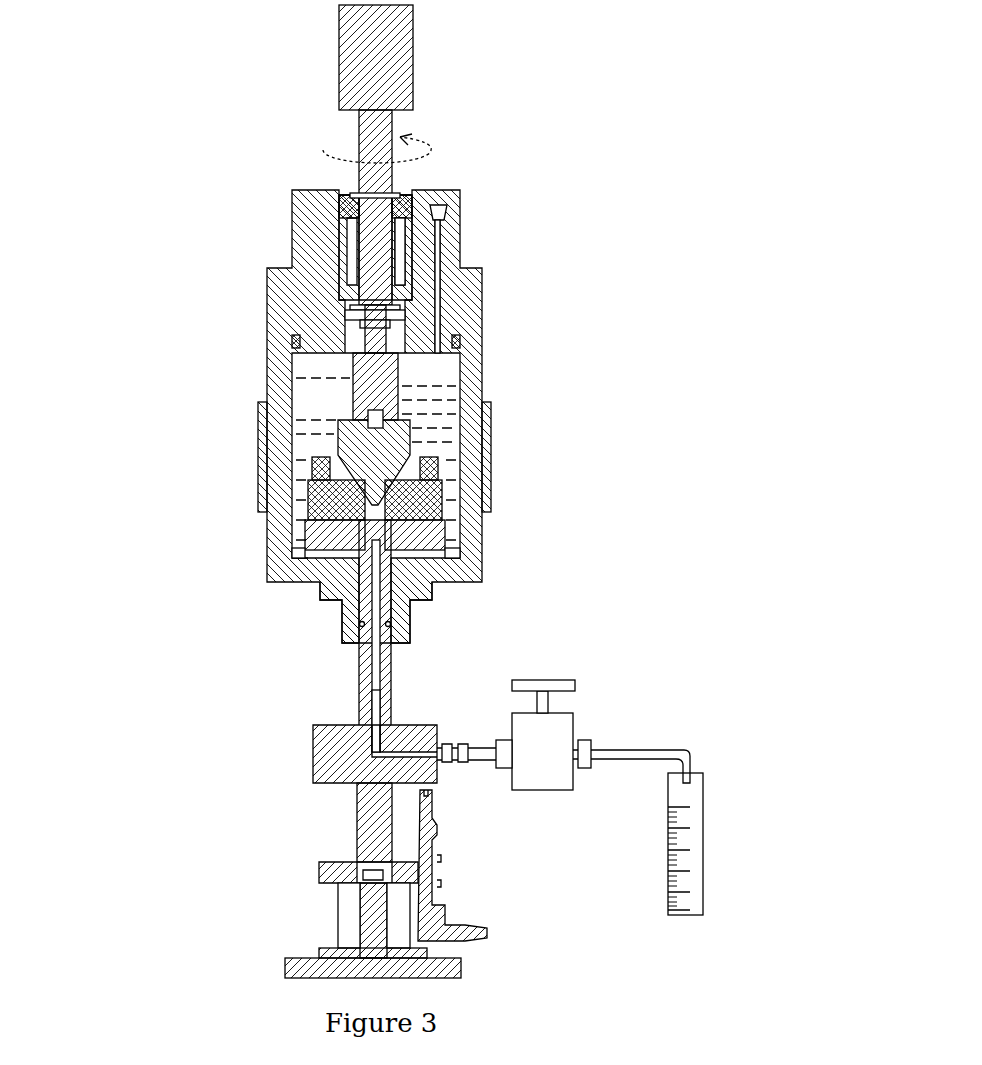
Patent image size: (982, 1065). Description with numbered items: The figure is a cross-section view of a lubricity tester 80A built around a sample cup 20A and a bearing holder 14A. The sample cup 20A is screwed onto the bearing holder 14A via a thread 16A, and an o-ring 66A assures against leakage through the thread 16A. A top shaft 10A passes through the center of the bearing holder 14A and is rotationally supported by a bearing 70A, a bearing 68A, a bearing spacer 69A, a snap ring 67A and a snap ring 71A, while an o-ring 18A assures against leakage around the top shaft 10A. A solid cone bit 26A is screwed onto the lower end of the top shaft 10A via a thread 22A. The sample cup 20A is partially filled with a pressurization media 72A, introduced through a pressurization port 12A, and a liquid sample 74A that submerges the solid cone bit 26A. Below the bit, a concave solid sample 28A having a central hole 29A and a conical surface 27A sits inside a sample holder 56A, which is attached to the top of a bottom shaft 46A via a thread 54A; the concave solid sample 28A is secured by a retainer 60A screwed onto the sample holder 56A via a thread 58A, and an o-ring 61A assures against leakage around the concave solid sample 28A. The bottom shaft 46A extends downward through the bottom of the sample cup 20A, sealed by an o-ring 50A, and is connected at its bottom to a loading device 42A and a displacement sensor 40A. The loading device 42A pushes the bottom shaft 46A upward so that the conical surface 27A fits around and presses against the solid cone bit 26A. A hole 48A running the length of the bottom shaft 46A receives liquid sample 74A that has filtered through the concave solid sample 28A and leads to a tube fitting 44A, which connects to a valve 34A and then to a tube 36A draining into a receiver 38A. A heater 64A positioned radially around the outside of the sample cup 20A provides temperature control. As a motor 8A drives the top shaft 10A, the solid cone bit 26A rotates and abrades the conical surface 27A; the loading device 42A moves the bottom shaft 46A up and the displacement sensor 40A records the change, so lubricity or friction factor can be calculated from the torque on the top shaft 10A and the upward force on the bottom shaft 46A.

The motor 8A is at (413, 55).
The top shaft 10A is at (396, 133).
The pressurization port 12A is at (447, 187).
The bearing holder 14A is at (460, 233).
The thread 16A is at (483, 280).
The o-ring 18A is at (458, 313).
The sample cup 20A is at (483, 353).
The thread 22A is at (420, 387).
The solid cone bit 26A is at (443, 445).
The conical surface 27A is at (430, 477).
The concave solid sample 28A is at (445, 487).
The central hole 29A is at (445, 508).
The valve 34A is at (560, 735).
The tube 36A is at (690, 778).
The receiver 38A is at (695, 833).
The displacement sensor 40A is at (437, 882).
The loading device 42A is at (330, 903).
The tube fitting 44A is at (281, 841).
The bottom shaft 46A is at (362, 715).
The hole 48A is at (372, 680).
The o-ring 50A is at (355, 625).
The thread 54A is at (307, 548).
The sample holder 56A is at (307, 518).
The thread 58A is at (305, 468).
The retainer 60A is at (313, 458).
The o-ring 61A is at (313, 485).
The heater 64A is at (262, 403).
The o-ring 66A is at (292, 355).
The snap ring 67A is at (296, 338).
The bearing 68A is at (300, 300).
The bearing spacer 69A is at (340, 265).
The bearing 70A is at (305, 225).
The snap ring 71A is at (345, 192).
The pressurization media 72A is at (397, 386).
The liquid sample 74A is at (323, 459).
The lubricity tester 80A is at (310, 119).